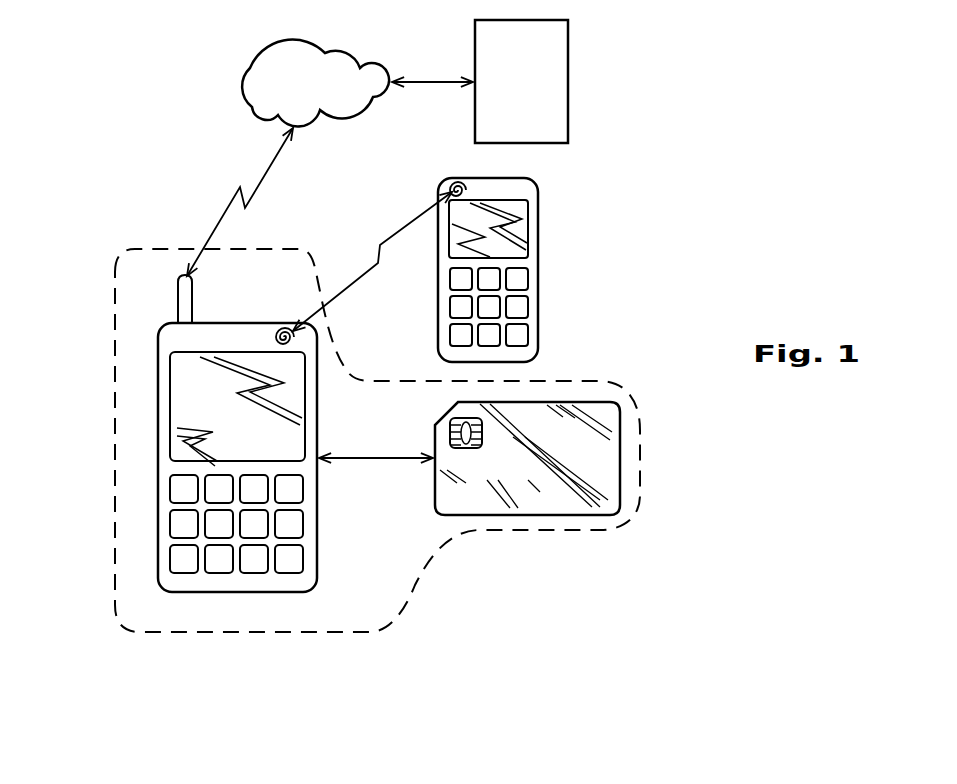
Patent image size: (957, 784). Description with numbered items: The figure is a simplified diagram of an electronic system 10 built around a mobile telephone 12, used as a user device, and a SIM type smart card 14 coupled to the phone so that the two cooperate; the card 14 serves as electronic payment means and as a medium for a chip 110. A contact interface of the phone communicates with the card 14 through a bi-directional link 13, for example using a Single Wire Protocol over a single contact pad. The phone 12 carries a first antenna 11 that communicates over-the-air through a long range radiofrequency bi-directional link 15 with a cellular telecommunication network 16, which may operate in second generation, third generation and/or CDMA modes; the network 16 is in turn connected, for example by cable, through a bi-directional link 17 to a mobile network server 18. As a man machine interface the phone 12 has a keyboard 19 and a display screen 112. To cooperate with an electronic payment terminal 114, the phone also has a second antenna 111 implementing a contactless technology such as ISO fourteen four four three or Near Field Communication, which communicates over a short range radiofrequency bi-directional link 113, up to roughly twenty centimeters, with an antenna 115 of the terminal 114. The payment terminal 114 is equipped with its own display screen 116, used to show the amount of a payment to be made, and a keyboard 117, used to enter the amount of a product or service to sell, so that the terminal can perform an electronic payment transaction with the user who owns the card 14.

The electronic system 10 is at (152, 248).
The first antenna 11 is at (180, 298).
The mobile telephone 12 is at (340, 350).
The bi-directional link 13 is at (375, 470).
The SIM type smart card 14 is at (600, 462).
The long range radiofrequency bi-directional link 15 is at (266, 183).
The cellular telecommunication network 16 is at (240, 92).
The bi-directional link 17 is at (424, 82).
The mobile network server 18 is at (570, 82).
The keyboard 19 is at (178, 527).
The chip 110 is at (468, 449).
The second antenna 111 is at (281, 326).
The display screen 112 is at (170, 378).
The short range radiofrequency bi-directional link 113 is at (415, 232).
The electronic payment terminal 114 is at (539, 215).
The antenna 115 is at (465, 178).
The display screen 116 is at (530, 232).
The keyboard 117 is at (520, 334).